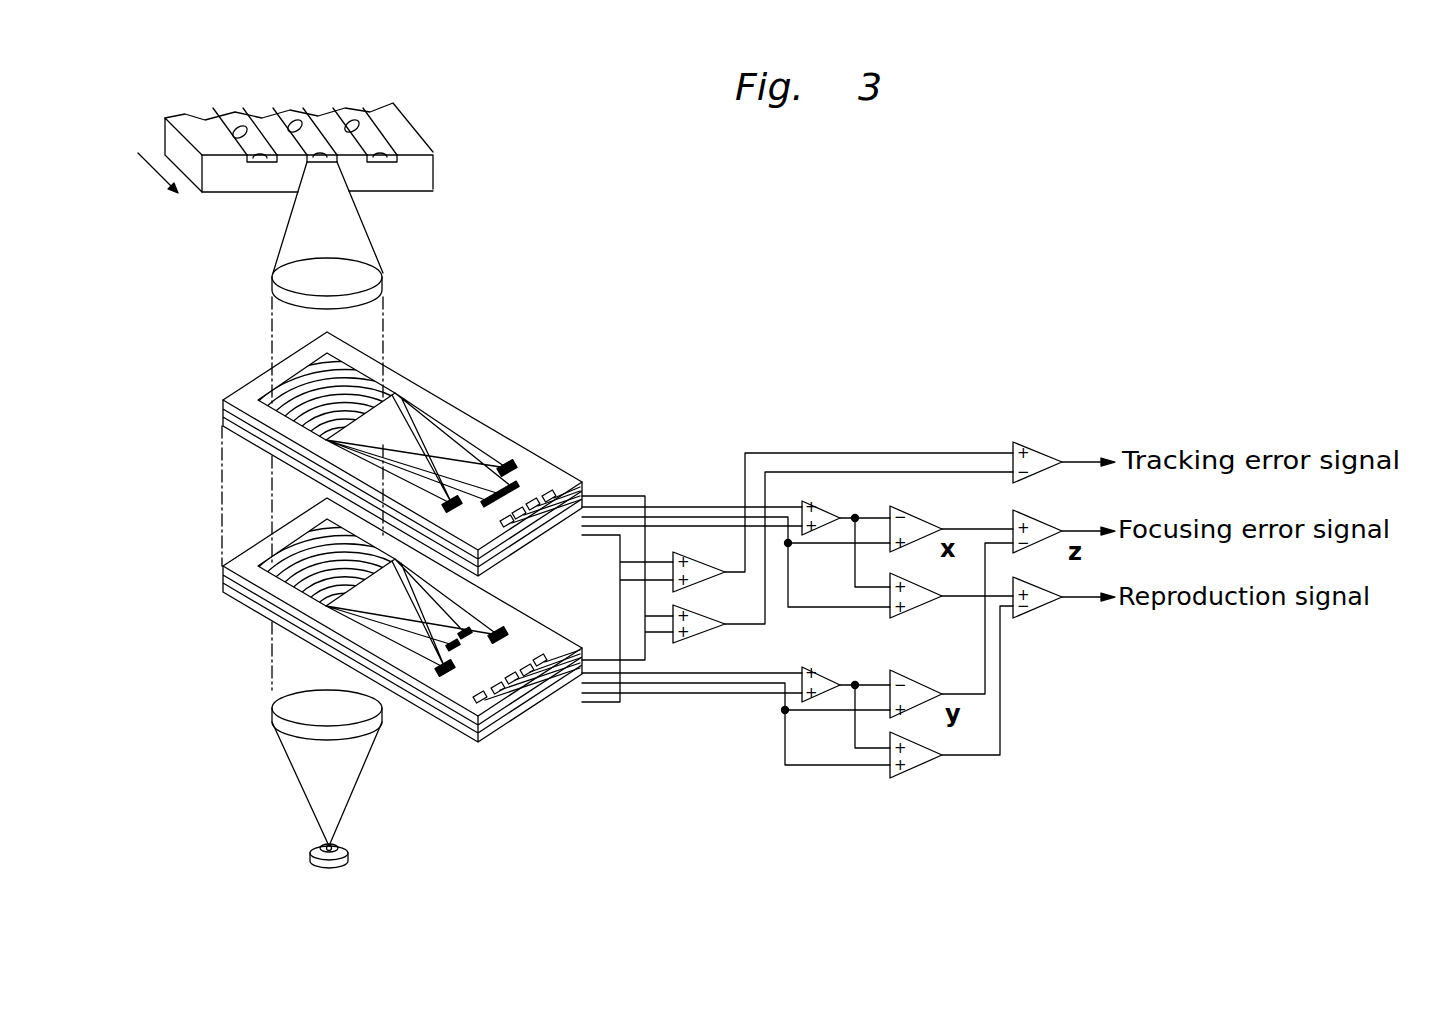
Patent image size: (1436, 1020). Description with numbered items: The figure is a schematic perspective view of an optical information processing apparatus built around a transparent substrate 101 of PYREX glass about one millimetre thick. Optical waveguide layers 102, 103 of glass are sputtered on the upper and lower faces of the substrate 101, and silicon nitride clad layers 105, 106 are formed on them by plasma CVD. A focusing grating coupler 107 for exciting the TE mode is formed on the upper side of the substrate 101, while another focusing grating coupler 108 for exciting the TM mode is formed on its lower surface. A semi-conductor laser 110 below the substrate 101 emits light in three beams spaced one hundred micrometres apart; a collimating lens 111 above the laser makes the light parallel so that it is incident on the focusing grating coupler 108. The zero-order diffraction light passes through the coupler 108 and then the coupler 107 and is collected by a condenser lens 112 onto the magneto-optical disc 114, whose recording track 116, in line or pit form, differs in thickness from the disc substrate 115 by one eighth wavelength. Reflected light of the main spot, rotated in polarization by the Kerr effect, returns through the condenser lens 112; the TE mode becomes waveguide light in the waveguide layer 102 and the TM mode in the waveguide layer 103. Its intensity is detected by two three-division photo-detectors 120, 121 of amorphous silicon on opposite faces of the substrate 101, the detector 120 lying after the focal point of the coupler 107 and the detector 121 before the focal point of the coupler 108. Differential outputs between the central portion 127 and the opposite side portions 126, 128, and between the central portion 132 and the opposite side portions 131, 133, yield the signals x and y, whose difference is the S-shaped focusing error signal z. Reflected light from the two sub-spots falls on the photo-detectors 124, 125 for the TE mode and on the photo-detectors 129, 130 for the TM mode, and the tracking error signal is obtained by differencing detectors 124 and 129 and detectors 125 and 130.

The transparent substrate 101 is at (233, 452).
The optical waveguide layer 102 is at (223, 412).
The optical waveguide layer 103 is at (223, 566).
The silicon nitride clad layer 105 is at (223, 400).
The silicon nitride clad layer 106 is at (290, 590).
The focusing grating coupler 107 is at (287, 382).
The focusing grating coupler 108 is at (262, 600).
The semi-conductor laser 110 is at (310, 856).
The collimating lens 111 is at (272, 718).
The condenser lens 112 is at (273, 292).
The magneto-optical disc 114 is at (222, 197).
The substrate 115 is at (222, 175).
The recording track 116 is at (303, 142).
The three-division photo-detector 120 is at (571, 320).
The three-division photo-detector 121 is at (637, 845).
The photo-detector 124 is at (453, 498).
The photo-detector 125 is at (507, 463).
The opposite side portion 126 is at (492, 497).
The central portion 127 is at (503, 490).
The opposite side portion 128 is at (516, 484).
The photo-detector 129 is at (445, 672).
The photo-detector 130 is at (567, 655).
The opposite side portion 131 is at (457, 660).
The central portion 132 is at (498, 690).
The opposite side portion 133 is at (525, 680).